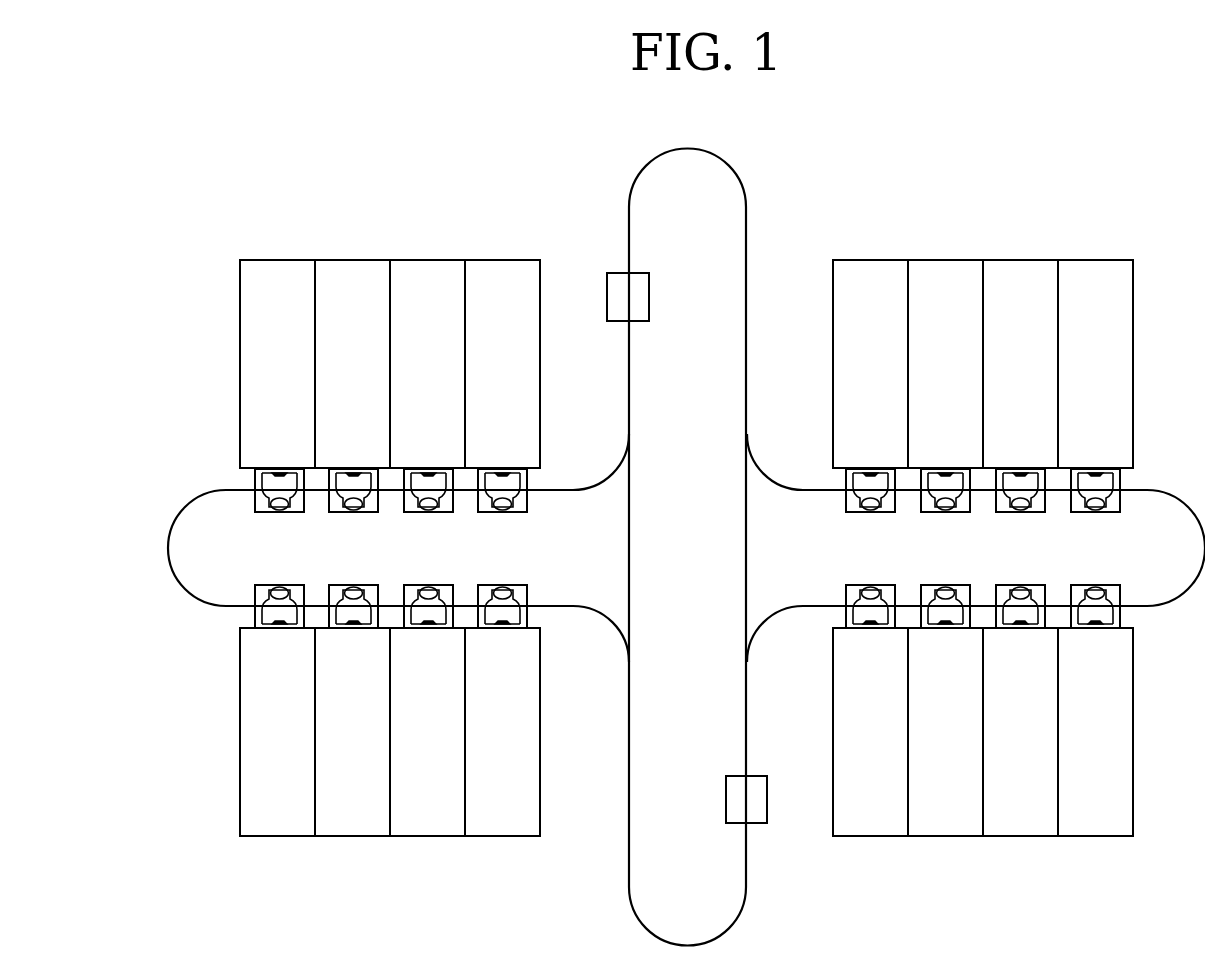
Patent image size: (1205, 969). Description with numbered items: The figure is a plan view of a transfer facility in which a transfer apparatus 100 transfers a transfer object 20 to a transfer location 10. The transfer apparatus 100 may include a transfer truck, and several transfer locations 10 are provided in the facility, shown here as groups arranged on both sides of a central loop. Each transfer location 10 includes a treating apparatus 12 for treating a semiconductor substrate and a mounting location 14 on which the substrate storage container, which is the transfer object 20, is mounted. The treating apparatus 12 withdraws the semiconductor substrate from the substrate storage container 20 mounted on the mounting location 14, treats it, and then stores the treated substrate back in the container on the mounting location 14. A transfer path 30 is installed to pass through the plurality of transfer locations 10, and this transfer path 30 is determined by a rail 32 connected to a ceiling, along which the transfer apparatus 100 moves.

The transfer location 10 is at (351, 324).
The treating apparatus 12 is at (240, 362).
The mounting location 14 is at (277, 512).
The transfer object 20 is at (289, 517).
The transfer path 30 is at (726, 526).
The rail 32 is at (747, 235).
The transfer apparatus 100 is at (610, 267).